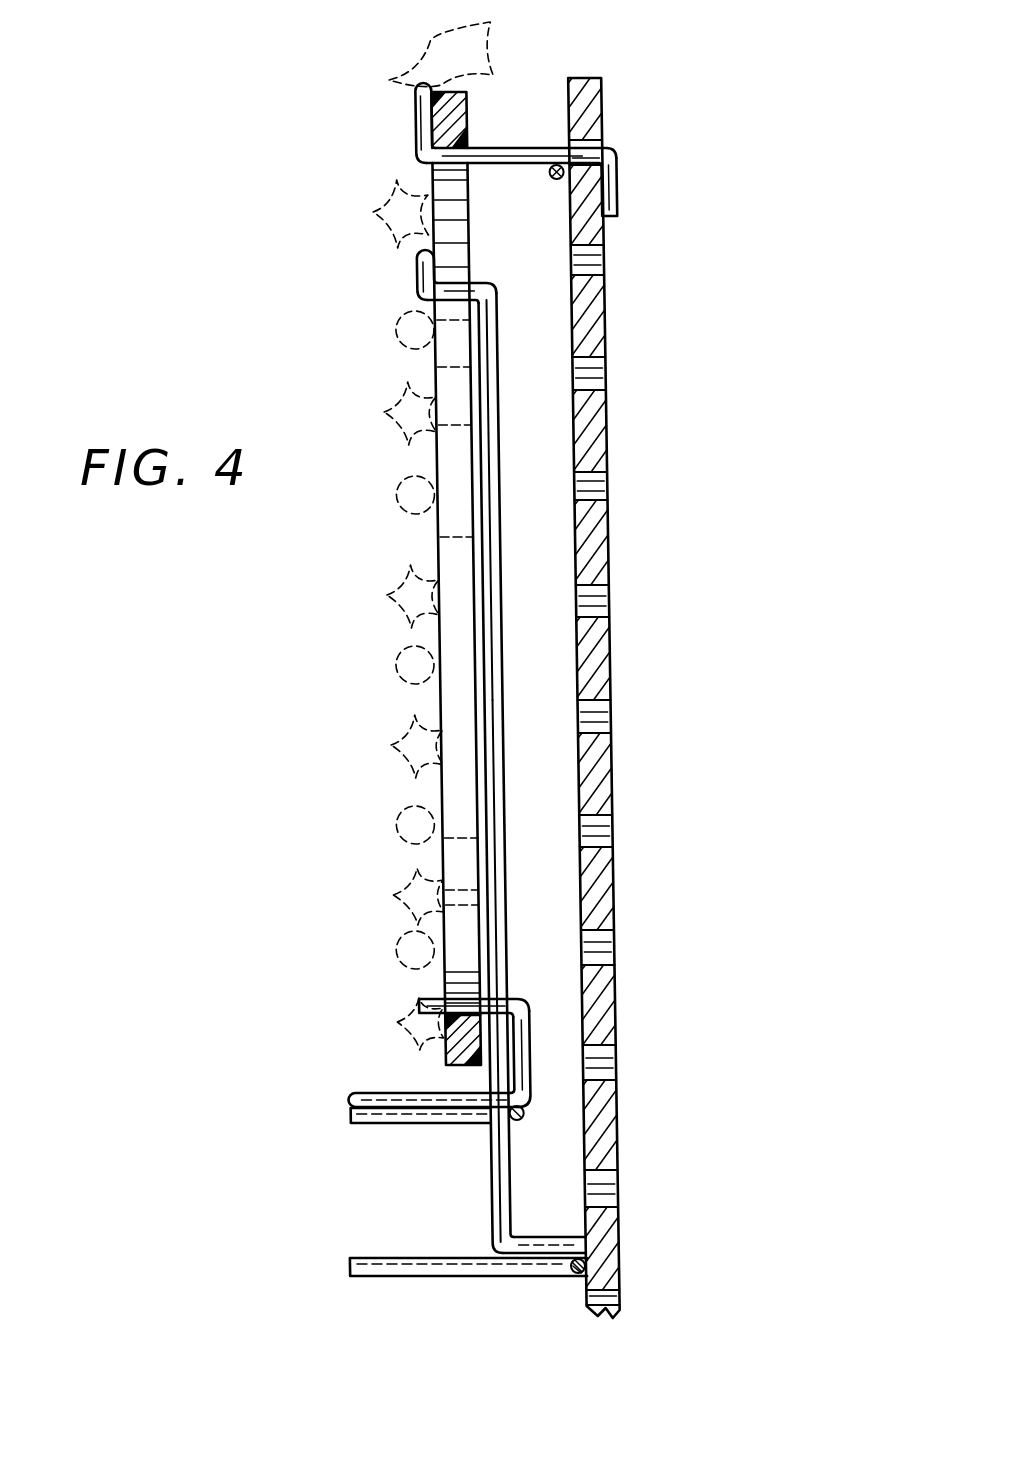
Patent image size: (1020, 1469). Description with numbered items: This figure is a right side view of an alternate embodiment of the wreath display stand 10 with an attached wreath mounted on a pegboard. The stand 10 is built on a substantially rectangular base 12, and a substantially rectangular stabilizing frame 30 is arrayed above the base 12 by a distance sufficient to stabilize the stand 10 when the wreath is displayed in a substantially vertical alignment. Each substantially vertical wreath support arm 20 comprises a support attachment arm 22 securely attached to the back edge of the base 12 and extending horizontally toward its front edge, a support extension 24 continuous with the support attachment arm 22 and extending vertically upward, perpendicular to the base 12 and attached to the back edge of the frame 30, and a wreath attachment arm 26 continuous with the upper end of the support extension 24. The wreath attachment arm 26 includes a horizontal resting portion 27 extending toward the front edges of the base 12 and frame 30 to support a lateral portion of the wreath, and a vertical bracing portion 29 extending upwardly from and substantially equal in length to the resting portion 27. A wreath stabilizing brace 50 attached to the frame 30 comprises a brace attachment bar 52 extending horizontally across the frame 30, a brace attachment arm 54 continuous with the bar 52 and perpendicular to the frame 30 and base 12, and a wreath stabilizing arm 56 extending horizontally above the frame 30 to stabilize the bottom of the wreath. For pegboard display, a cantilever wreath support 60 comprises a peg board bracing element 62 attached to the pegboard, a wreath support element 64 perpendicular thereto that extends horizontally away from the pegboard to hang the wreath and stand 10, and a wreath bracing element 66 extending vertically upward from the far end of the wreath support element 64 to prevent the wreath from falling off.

The wreath display stand 10 is at (352, 1262).
The base 12 is at (594, 698).
The wreath support arm 20 is at (502, 648).
The support attachment arm 22 is at (556, 1245).
The support extension 24 is at (505, 870).
The wreath attachment arm 26 is at (434, 213).
The horizontal resting portion 27 is at (478, 290).
The vertical bracing portion 29 is at (420, 275).
The stabilizing frame 30 is at (350, 1104).
The wreath stabilizing brace 50 is at (496, 1015).
The brace attachment bar 52 is at (395, 1090).
The brace attachment arm 54 is at (531, 1015).
The wreath stabilizing arm 56 is at (503, 1000).
The cantilever wreath support 60 is at (512, 112).
The peg board bracing element 62 is at (620, 180).
The wreath support element 64 is at (519, 148).
The wreath bracing element 66 is at (414, 100).